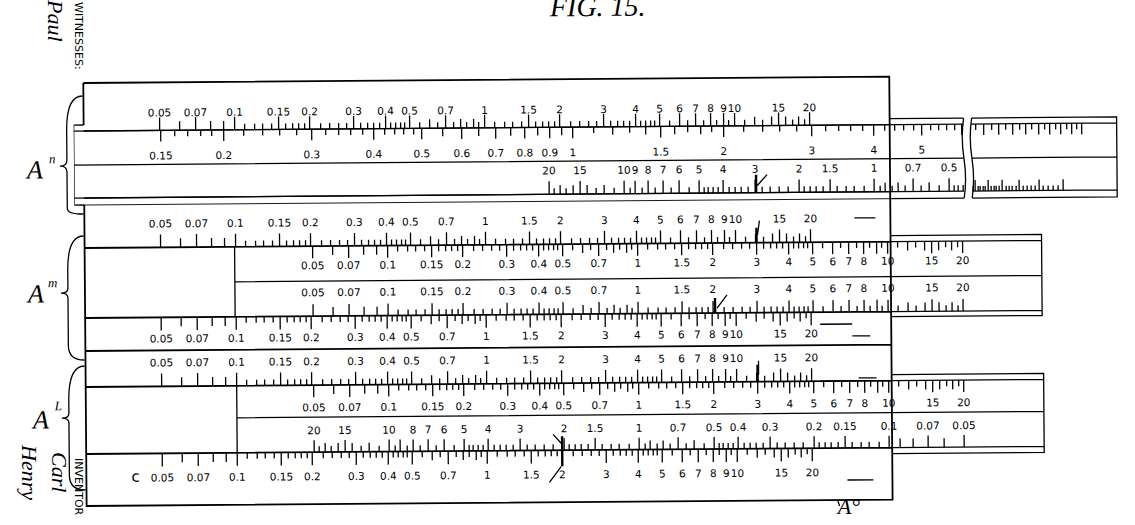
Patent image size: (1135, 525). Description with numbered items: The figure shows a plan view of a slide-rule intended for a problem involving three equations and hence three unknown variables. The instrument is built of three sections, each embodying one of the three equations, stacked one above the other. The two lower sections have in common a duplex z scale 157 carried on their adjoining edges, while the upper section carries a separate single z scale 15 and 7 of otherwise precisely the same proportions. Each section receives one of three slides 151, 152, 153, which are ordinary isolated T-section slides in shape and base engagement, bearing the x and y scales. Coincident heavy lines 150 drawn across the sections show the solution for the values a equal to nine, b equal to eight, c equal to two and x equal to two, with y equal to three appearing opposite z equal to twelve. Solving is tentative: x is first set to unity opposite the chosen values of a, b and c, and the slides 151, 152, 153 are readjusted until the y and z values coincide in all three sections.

The separate single z scale 7 is at (818, 236).
The separate single z scale 15 is at (817, 203).
The coincident heavy lines 150 is at (661, 327).
The slide 151 is at (998, 412).
The slide 152 is at (998, 272).
The slide 153 is at (604, 305).
The duplex z scale 157 is at (876, 374).